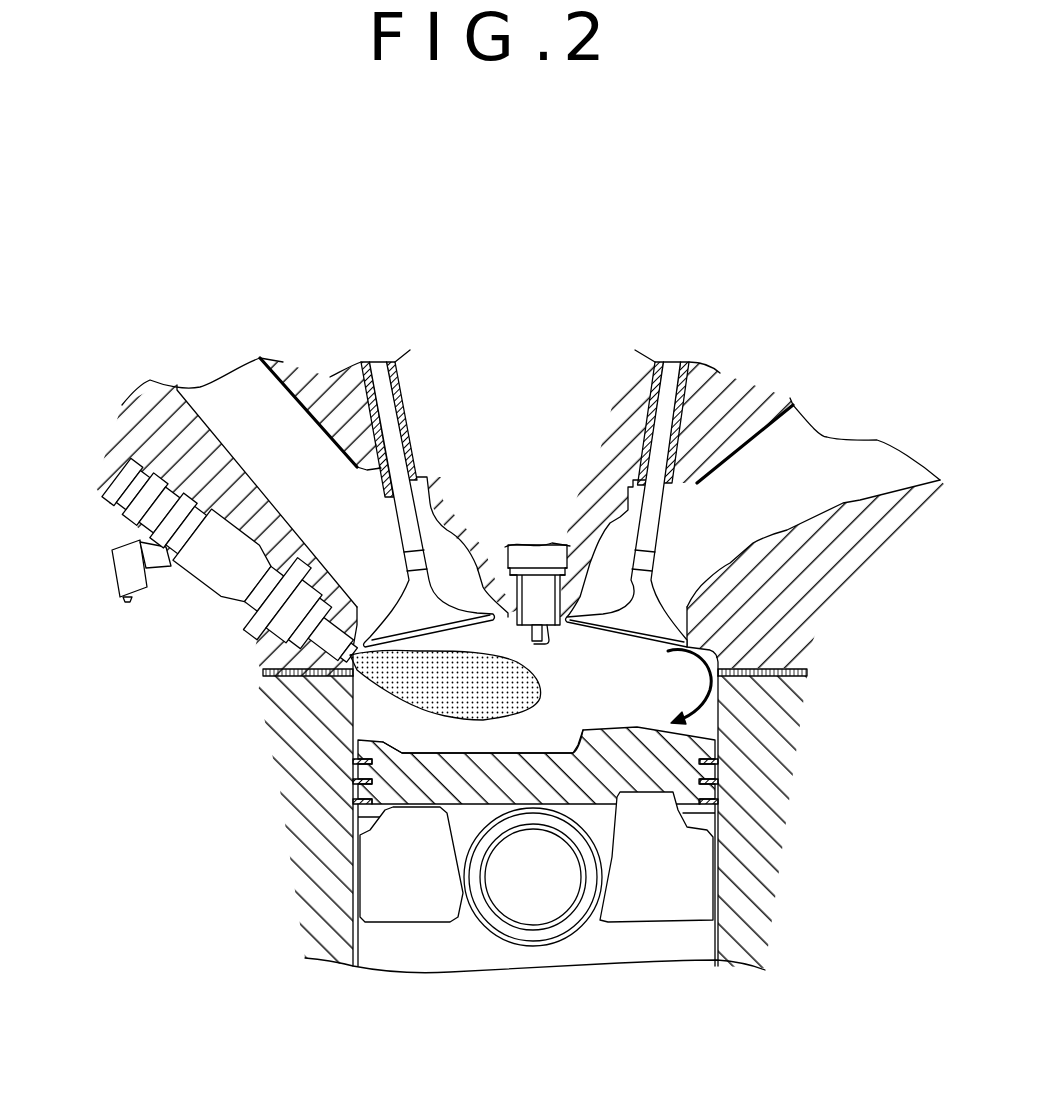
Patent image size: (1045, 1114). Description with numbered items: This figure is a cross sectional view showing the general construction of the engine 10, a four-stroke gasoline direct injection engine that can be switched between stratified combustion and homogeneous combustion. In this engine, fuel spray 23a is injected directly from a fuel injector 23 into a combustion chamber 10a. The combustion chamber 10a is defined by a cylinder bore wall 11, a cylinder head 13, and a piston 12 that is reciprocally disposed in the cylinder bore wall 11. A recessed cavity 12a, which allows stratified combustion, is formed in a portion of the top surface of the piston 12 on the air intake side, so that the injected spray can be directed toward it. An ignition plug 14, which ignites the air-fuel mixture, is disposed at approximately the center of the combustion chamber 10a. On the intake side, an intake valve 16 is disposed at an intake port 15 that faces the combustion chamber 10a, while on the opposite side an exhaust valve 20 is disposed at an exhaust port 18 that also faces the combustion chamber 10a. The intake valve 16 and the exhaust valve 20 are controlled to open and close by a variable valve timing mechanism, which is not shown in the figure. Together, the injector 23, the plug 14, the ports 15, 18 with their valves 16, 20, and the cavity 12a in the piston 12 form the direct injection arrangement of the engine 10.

The engine 10 is at (568, 245).
The combustion chamber 10a is at (630, 670).
The cylinder bore wall 11 is at (710, 692).
The piston 12 is at (596, 732).
The recessed cavity 12a is at (413, 742).
The cylinder head 13 is at (800, 588).
The ignition plug 14 is at (538, 575).
The intake port 15 is at (237, 377).
The intake valve 16 is at (405, 617).
The exhaust port 18 is at (830, 452).
The exhaust valve 20 is at (638, 608).
The fuel injector 23 is at (120, 510).
The fuel spray 23a is at (433, 690).